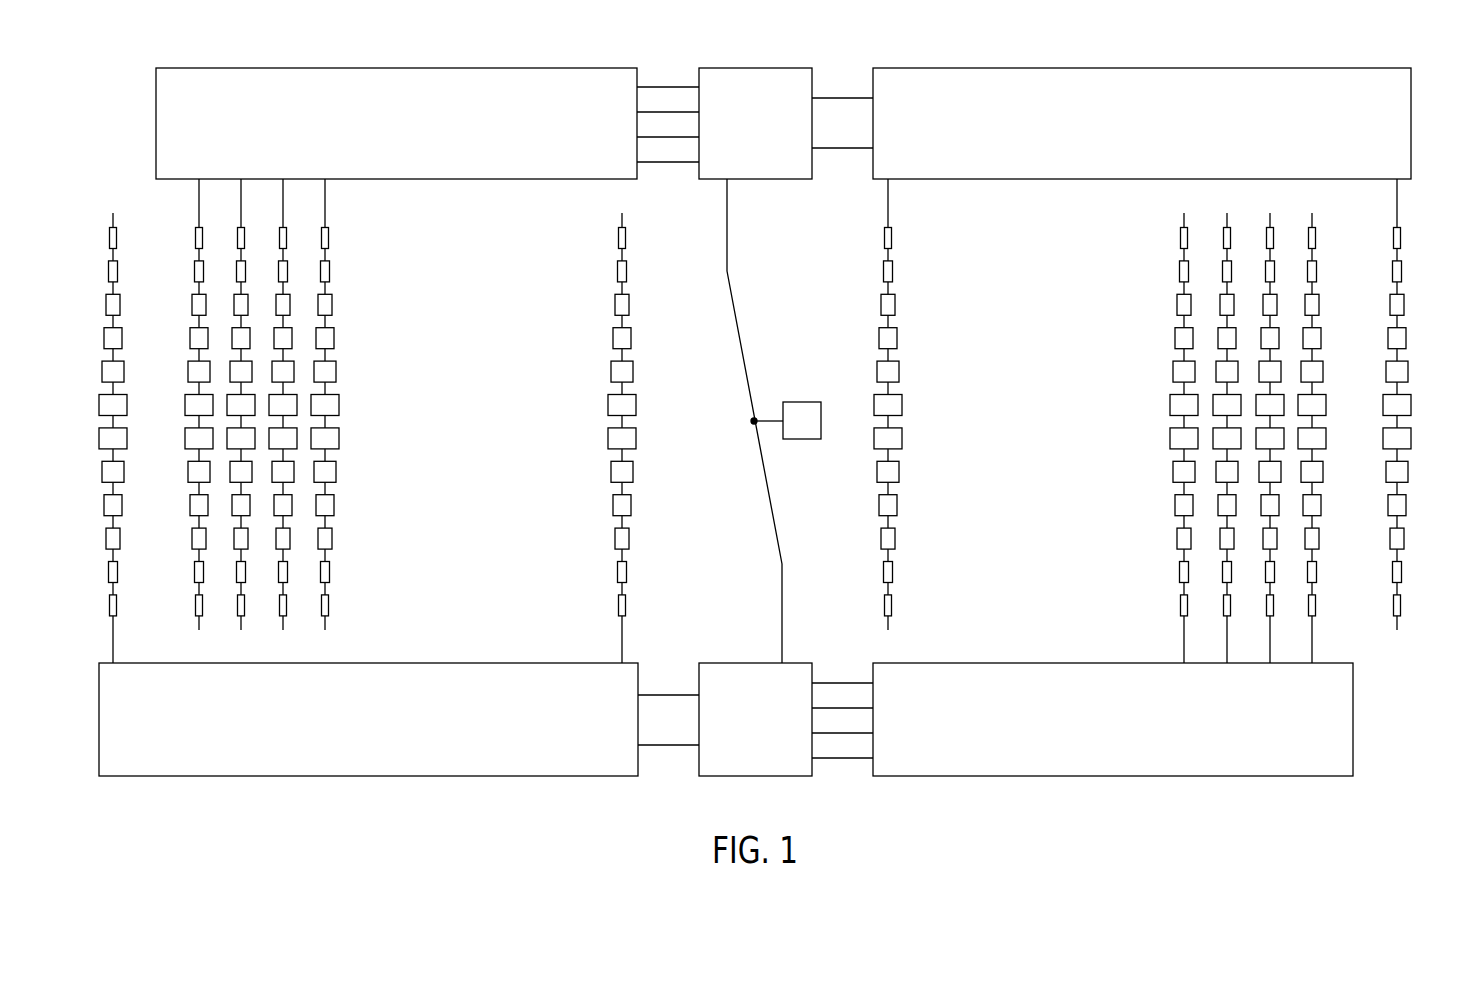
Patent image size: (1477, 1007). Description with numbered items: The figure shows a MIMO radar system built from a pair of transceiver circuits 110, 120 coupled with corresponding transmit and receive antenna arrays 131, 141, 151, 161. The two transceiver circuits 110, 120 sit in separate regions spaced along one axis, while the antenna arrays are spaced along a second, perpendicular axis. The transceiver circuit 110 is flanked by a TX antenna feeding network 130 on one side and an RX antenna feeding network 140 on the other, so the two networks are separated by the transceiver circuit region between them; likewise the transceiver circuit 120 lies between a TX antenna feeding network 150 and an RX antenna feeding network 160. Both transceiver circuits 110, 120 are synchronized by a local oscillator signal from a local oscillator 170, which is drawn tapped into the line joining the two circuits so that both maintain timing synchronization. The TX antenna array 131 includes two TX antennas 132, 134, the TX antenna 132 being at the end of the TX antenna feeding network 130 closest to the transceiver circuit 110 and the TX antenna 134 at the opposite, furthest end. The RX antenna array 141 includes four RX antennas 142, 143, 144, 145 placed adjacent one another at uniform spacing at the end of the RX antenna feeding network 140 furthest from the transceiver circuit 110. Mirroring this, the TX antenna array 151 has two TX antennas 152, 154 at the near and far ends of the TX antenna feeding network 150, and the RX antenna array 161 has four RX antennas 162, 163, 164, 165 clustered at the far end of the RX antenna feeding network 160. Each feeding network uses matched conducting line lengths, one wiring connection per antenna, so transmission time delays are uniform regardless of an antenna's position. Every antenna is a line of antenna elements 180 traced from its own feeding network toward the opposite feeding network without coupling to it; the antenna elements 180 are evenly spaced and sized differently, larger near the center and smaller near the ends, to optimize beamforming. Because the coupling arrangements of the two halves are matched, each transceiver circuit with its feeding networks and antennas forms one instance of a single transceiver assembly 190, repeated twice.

The transceiver circuit 110 is at (755, 67).
The transceiver circuit 120 is at (755, 776).
The TX antenna feeding network 130 is at (1145, 67).
The TX antenna array 131 is at (1397, 145).
The TX antenna 132 is at (888, 197).
The TX antenna 134 is at (1397, 197).
The RX antenna feeding network 140 is at (415, 67).
The RX antenna array 141 is at (326, 145).
The RX antenna 142 is at (199, 197).
The RX antenna 143 is at (241, 197).
The RX antenna 144 is at (283, 197).
The RX antenna 145 is at (325, 197).
The TX antenna feeding network 150 is at (370, 776).
The TX antenna array 151 is at (623, 698).
The TX antenna 152 is at (622, 648).
The TX antenna 154 is at (113, 648).
The RX antenna feeding network 160 is at (1118, 776).
The RX antenna array 161 is at (1312, 698).
The RX antenna 162 is at (1312, 648).
The RX antenna 163 is at (1270, 648).
The RX antenna 164 is at (1227, 648).
The RX antenna 165 is at (1184, 648).
The local oscillator 170 is at (805, 402).
The antenna elements 180 is at (328, 238).
The transceiver assembly 190 is at (1418, 68).